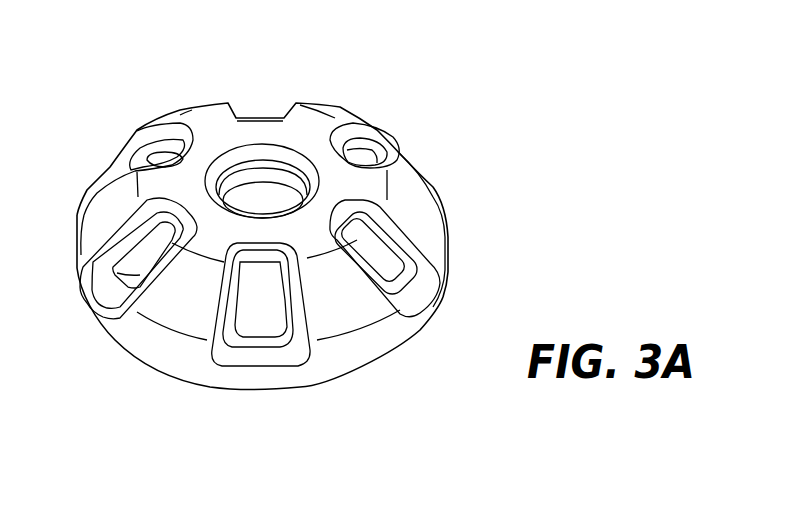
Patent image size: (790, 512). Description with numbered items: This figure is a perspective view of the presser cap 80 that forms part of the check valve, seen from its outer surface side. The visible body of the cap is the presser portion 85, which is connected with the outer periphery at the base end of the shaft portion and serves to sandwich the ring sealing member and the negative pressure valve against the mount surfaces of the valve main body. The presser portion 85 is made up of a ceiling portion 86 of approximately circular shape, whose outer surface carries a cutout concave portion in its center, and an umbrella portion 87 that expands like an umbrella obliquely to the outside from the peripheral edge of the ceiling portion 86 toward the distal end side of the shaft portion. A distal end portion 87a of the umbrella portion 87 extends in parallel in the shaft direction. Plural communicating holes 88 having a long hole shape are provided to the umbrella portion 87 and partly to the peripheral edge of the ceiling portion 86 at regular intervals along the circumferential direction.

The presser cap 80 is at (281, 98).
The presser portion 85 is at (541, 205).
The ceiling portion 86 is at (377, 187).
The umbrella portion 87 is at (430, 233).
The distal end portion 87a is at (180, 382).
The communicating holes 88 is at (393, 157).